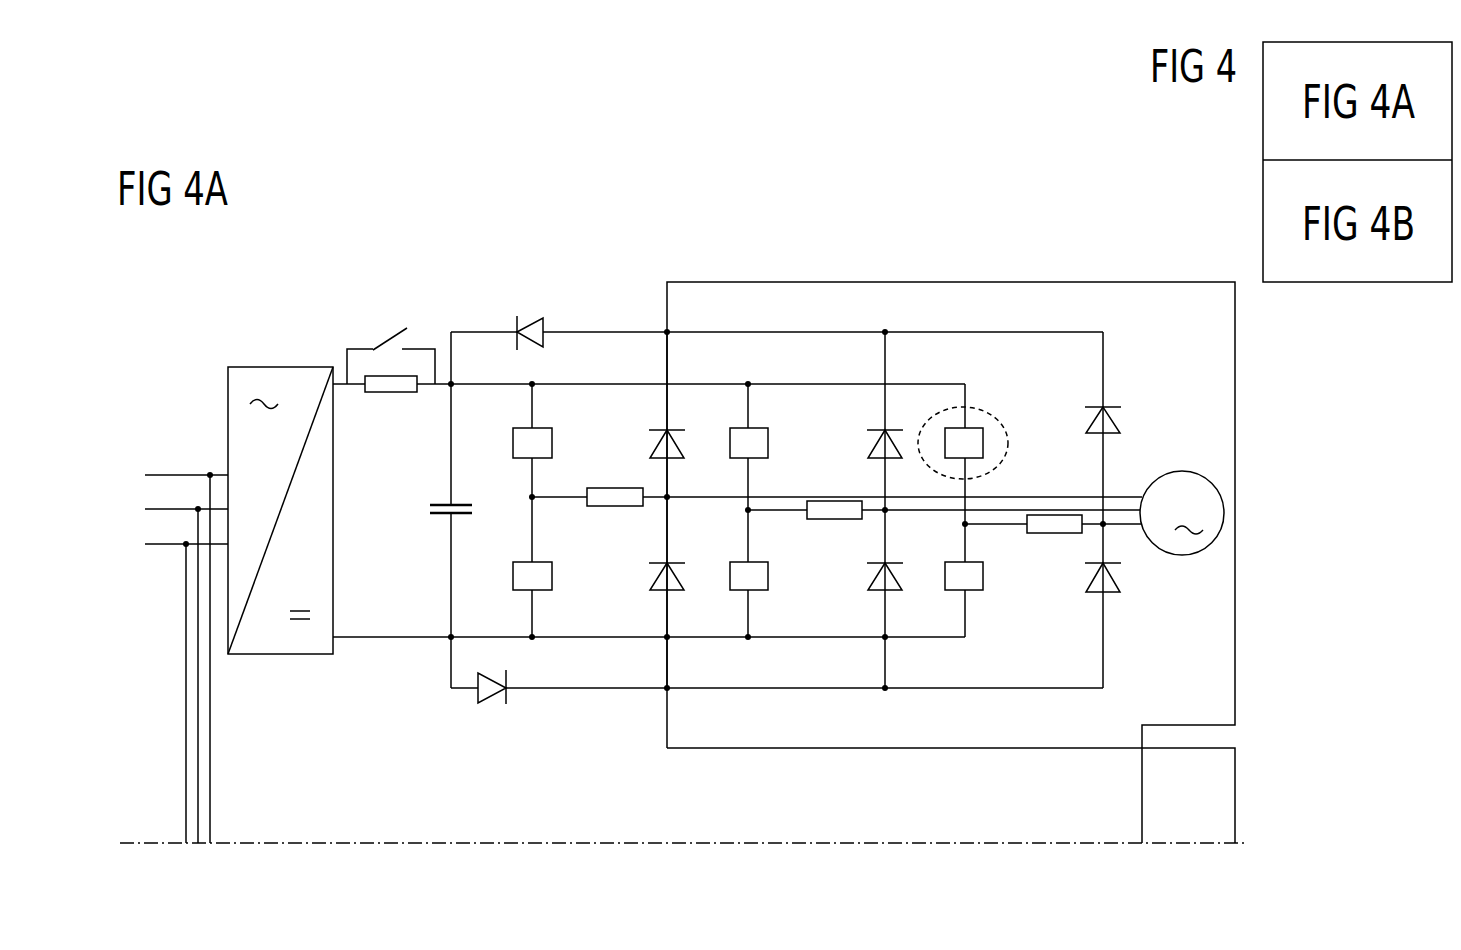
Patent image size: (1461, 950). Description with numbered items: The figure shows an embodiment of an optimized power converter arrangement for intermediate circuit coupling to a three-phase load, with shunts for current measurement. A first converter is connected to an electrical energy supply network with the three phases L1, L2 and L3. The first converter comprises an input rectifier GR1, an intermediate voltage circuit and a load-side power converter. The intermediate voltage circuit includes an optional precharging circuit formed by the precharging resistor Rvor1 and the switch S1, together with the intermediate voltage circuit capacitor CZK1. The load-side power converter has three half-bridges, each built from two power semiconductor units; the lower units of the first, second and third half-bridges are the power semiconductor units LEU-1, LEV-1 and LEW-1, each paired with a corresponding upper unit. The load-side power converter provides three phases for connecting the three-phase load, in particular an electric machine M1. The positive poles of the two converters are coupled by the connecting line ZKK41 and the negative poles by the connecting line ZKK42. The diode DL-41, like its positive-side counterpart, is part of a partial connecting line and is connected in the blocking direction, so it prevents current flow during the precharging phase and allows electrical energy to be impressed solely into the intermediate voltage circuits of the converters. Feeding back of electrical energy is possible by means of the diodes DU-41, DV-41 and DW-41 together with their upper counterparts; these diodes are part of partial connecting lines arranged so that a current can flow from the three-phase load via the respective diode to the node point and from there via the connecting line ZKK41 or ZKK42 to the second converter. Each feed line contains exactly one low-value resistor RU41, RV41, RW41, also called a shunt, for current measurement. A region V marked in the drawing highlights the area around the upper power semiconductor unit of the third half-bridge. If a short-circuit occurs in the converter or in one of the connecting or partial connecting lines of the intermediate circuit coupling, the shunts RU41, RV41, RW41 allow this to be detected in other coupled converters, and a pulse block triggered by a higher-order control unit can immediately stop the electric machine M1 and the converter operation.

The phase L1 is at (171, 649).
The phase L2 is at (171, 666).
The phase L3 is at (171, 684).
The input rectifier GR1 is at (281, 367).
The switch S1 is at (393, 330).
The precharging resistor Rvor1 is at (390, 393).
The intermediate voltage circuit capacitor CZK1 is at (437, 520).
The diode DL-41 is at (490, 707).
The power semiconductor unit LEU-1 is at (545, 592).
The power semiconductor unit LEV-1 is at (760, 592).
The power semiconductor unit LEW-1 is at (975, 592).
The diode DU-41 is at (673, 592).
The diode DV-41 is at (893, 592).
The diode DW-41 is at (1110, 593).
The low-value resistor RU41 is at (613, 508).
The low-value resistor RV41 is at (835, 519).
The low-value resistor RW41 is at (1042, 535).
The detail region V is at (1007, 452).
The electric machine M1 is at (1180, 468).
The connecting line ZKK41 is at (940, 276).
The connecting line ZKK42 is at (940, 750).